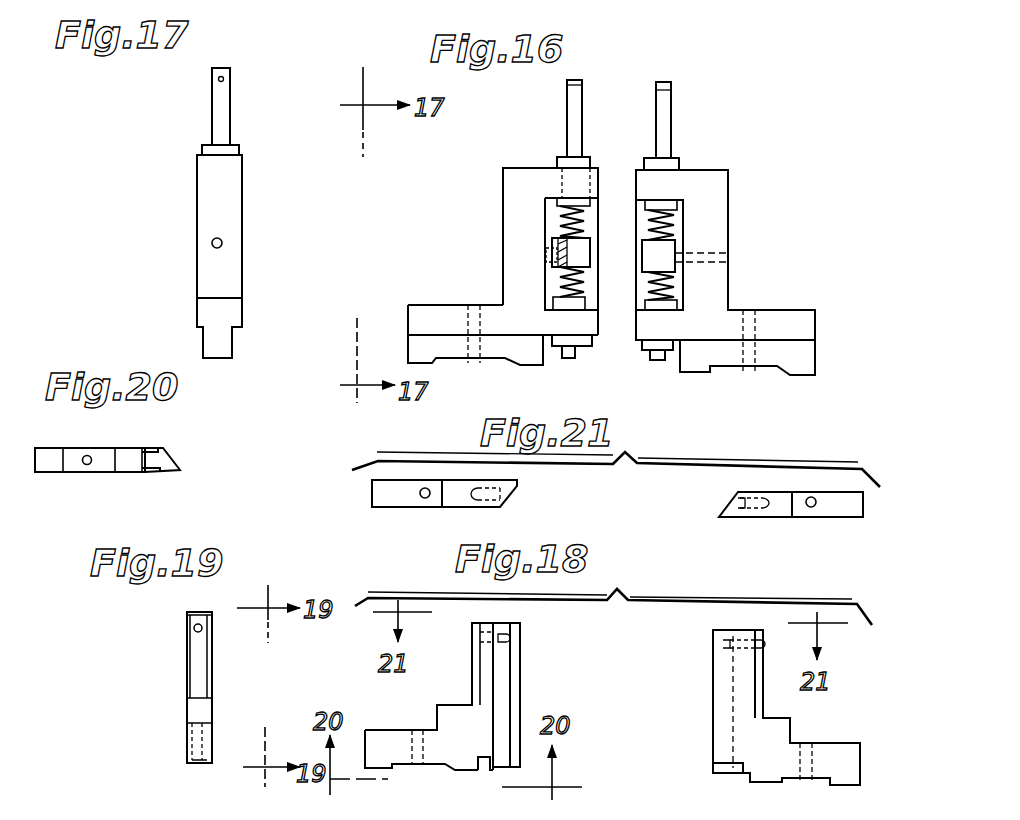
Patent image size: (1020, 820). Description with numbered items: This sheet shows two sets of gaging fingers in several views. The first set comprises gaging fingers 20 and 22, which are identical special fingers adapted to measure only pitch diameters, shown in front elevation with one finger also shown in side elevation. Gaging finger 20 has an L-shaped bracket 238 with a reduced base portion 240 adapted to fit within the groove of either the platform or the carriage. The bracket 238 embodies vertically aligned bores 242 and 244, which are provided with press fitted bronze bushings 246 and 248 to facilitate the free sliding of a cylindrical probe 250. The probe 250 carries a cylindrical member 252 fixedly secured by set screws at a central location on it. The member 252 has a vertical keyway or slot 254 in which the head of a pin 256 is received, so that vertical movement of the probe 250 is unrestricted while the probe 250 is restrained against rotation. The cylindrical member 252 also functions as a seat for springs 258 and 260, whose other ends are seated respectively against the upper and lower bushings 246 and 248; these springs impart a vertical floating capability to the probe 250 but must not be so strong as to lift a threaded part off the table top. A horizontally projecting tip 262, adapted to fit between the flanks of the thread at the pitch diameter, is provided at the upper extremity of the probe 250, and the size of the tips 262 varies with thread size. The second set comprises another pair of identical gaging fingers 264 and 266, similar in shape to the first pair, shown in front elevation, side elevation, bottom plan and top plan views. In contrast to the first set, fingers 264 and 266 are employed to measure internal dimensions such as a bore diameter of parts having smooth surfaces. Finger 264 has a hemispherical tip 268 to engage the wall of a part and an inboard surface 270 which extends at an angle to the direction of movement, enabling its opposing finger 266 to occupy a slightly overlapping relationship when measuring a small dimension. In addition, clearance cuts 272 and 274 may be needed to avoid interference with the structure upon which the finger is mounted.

In FIG. 16, the gaging finger 20 is at (478, 221).
In FIG. 16, the gaging finger 22 is at (748, 203).
In FIG. 16, the L-shaped bracket 238 is at (520, 185).
In FIG. 17, the reduced base portion 240 is at (208, 340).
In FIG. 16, the reduced base portion 240 is at (527, 355).
In FIG. 16, the bore 242 is at (556, 163).
In FIG. 16, the bore 244 is at (560, 318).
In FIG. 17, the bronze bushing 246 is at (203, 148).
In FIG. 16, the bronze bushing 246 is at (622, 140).
In FIG. 16, the bronze bushing 248 is at (575, 355).
In FIG. 17, the cylindrical probe 250 is at (220, 113).
In FIG. 16, the cylindrical probe 250 is at (572, 120).
In FIG. 16, the cylindrical member 252 is at (583, 256).
In FIG. 16, the vertical keyway or slot 254 is at (552, 262).
In FIG. 17, the pin 256 is at (212, 243).
In FIG. 16, the pin 256 is at (548, 250).
In FIG. 16, the spring 258 is at (583, 227).
In FIG. 16, the spring 260 is at (583, 290).
In FIG. 17, the horizontally projecting tip 262 is at (218, 82).
In FIG. 16, the horizontally projecting tip 262 is at (567, 88).
In FIG. 21, the gaging finger 264 is at (548, 488).
In FIG. 18, the gaging finger 264 is at (540, 690).
In FIG. 21, the gaging finger 266 is at (779, 510).
In FIG. 18, the gaging finger 266 is at (707, 697).
In FIG. 21, the hemispherical tip 268 is at (455, 498).
In FIG. 19, the hemispherical tip 268 is at (195, 632).
In FIG. 18, the hemispherical tip 268 is at (474, 633).
In FIG. 21, the inboard surface 270 is at (505, 508).
In FIG. 18, the inboard surface 270 is at (510, 672).
In FIG. 20, the clearance cut 272 is at (168, 474).
In FIG. 18, the clearance cut 272 is at (740, 776).
In FIG. 20, the clearance cut 274 is at (155, 448).
In FIG. 18, the clearance cut 274 is at (487, 773).